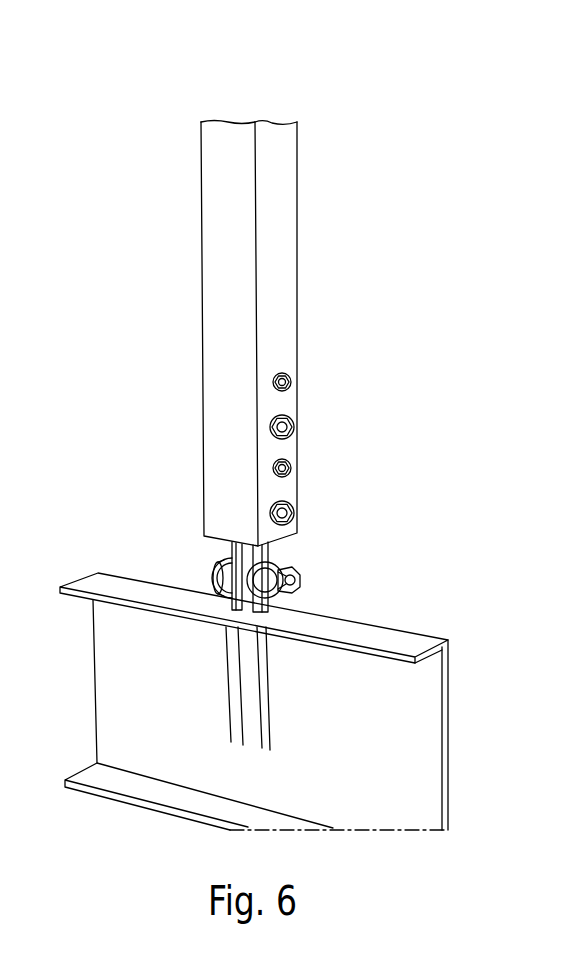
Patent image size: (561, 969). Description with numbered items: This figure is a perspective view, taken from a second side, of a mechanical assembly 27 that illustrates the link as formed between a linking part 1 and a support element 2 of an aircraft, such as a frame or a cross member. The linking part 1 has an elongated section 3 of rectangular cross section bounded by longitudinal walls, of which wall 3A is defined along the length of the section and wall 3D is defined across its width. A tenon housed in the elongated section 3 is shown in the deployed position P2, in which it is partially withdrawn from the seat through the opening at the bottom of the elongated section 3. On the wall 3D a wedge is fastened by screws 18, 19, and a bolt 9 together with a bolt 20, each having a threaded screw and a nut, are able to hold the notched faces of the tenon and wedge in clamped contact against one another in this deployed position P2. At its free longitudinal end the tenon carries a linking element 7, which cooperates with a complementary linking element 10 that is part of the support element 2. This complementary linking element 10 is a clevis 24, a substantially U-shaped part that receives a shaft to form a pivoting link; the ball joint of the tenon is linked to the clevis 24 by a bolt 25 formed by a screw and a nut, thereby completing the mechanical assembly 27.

The linking part 1 is at (173, 280).
The support element 2 is at (398, 630).
The elongated section 3 is at (297, 238).
The longitudinal wall 3A is at (228, 121).
The longitudinal wall 3D is at (272, 124).
The linking element 7 is at (290, 553).
The bolt 9 is at (300, 422).
The complementary linking element 10 is at (208, 578).
The screw 18 is at (300, 375).
The screw 19 is at (300, 468).
The bolt 20 is at (300, 513).
The clevis 24 is at (295, 602).
The bolt 25 is at (212, 567).
The mechanical assembly 27 is at (443, 500).
The deployed position P2 is at (363, 315).